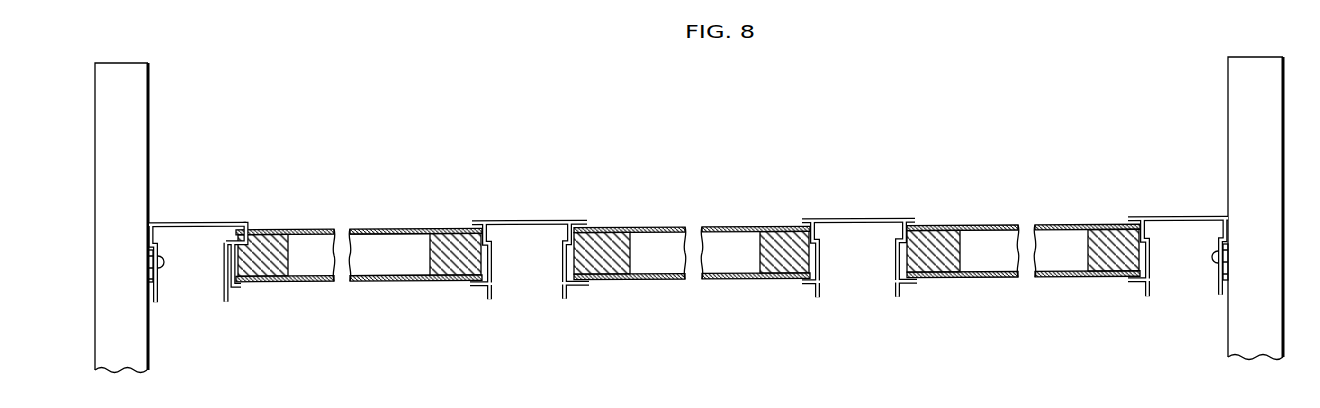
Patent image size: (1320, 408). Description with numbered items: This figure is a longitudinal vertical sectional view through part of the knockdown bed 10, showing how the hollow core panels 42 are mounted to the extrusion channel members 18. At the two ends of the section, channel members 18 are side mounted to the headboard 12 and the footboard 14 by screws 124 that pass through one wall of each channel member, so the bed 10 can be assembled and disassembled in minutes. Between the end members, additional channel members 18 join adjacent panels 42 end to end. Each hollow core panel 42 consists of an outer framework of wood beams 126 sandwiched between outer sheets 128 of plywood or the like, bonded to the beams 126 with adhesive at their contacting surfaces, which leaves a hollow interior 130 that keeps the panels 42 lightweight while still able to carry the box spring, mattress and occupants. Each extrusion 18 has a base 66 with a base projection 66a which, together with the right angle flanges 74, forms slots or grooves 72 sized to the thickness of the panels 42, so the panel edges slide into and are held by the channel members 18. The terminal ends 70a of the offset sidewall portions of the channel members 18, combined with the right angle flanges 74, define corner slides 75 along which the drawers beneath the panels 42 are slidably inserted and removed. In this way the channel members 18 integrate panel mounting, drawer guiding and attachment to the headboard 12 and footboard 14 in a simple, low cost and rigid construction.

The knockdown bed 10 is at (222, 156).
The headboard 12 is at (148, 118).
The footboard 14 is at (1228, 128).
The extrusion channel member 18 is at (165, 222).
The hollow core panel 42 is at (688, 249).
The base 66 is at (197, 222).
The base projection 66a is at (244, 222).
The terminal end of offset portion 70a is at (492, 298).
The slot or groove 72 is at (238, 285).
The flange 74 is at (223, 299).
The corner slide 75 is at (480, 287).
The screw 124 is at (163, 266).
The wood beam 126 is at (268, 243).
The outer sheet 128 is at (318, 229).
The hollow interior 130 is at (413, 263).